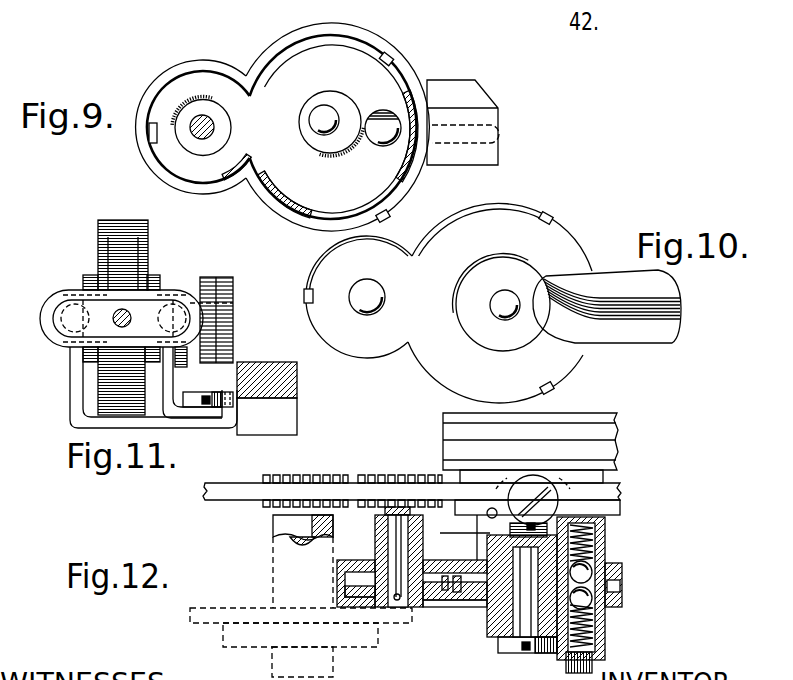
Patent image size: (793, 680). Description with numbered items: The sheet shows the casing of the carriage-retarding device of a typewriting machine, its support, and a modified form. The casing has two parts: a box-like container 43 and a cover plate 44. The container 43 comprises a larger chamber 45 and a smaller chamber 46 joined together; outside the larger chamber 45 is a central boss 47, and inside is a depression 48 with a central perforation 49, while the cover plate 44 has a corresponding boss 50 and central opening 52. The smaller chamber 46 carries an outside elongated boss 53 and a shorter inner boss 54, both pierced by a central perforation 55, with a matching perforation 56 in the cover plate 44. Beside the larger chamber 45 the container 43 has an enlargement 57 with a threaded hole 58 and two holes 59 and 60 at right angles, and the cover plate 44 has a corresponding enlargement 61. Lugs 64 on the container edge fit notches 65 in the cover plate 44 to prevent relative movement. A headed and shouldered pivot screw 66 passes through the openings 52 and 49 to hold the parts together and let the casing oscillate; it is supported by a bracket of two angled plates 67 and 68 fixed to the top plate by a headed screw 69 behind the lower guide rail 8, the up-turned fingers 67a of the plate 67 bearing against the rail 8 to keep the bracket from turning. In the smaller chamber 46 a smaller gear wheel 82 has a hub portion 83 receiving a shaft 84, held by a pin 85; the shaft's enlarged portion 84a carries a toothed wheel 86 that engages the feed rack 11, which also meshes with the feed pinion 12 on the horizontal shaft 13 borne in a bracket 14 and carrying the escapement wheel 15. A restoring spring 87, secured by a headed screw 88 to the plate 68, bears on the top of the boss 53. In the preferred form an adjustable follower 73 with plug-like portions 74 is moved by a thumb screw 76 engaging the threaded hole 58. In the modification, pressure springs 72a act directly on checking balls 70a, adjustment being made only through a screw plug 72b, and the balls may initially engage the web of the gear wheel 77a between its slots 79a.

In FIG. 11, the guide rail 8 is at (275, 396).
In FIG. 12, the guide rail 8 is at (617, 450).
In FIG. 12, the feed rack 11 is at (227, 488).
In FIG. 12, the feed pinion 12 is at (301, 478).
In FIG. 12, the horizontal shaft 13 is at (300, 546).
In FIG. 12, the bracket 14 is at (272, 525).
In FIG. 12, the escapement wheel 15 is at (296, 642).
In FIG. 9, the box-like container 43 is at (291, 127).
In FIG. 11, the box-like container 43 is at (149, 230).
In FIG. 10, the cover plate 44 is at (460, 303).
In FIG. 11, the cover plate 44 is at (104, 221).
In FIG. 9, the larger chamber 45 is at (308, 56).
In FIG. 9, the smaller chamber 46 is at (213, 83).
In FIG. 11, the central boss 47 is at (157, 280).
In FIG. 9, the depression 48 is at (341, 106).
In FIG. 9, the central perforation 49 is at (324, 112).
In FIG. 10, the boss 50 is at (505, 345).
In FIG. 11, the boss 50 is at (94, 282).
In FIG. 10, the central opening 52 is at (490, 315).
In FIG. 11, the outside elongated boss 53 is at (184, 297).
In FIG. 9, the inner boss 54 is at (192, 147).
In FIG. 12, the inner boss 54 is at (367, 573).
In FIG. 9, the central perforation 55 is at (214, 126).
In FIG. 10, the perforation 56 is at (367, 316).
In FIG. 9, the enlargement 57 is at (468, 91).
In FIG. 11, the enlargement 57 is at (170, 293).
In FIG. 9, the threaded hole 58 is at (498, 130).
In FIG. 9, the hole 59 is at (387, 126).
In FIG. 9, the hole 60 is at (378, 138).
In FIG. 10, the enlargement 61 is at (634, 342).
In FIG. 11, the enlargement 61 is at (70, 292).
In FIG. 9, the lugs 64 is at (392, 56).
In FIG. 11, the lugs 64 is at (99, 247).
In FIG. 10, the notches 65 is at (549, 220).
In FIG. 11, the pivot screw 66 is at (48, 333).
In FIG. 12, the pivot screw 66 is at (510, 653).
In FIG. 11, the angled plate 67 is at (73, 394).
In FIG. 12, the angled plate 67 is at (478, 557).
In FIG. 11, the up-turned fingers 67a is at (244, 364).
In FIG. 11, the angled plate 68 is at (203, 420).
In FIG. 12, the angled plate 68 is at (533, 480).
In FIG. 11, the headed screw 69 is at (193, 403).
In FIG. 12, the headed screw 69 is at (527, 483).
In FIG. 12, the checking balls 70a is at (592, 566).
In FIG. 12, the pressure springs 72a is at (598, 533).
In FIG. 12, the adjustable abutment or screw plug 72b is at (592, 660).
In FIG. 11, the adjustable slide or follower 73 is at (103, 322).
In FIG. 11, the plug-like portions 74 is at (127, 318).
In FIG. 11, the thumb screw 76 is at (123, 310).
In FIG. 12, the gear wheel 77a is at (456, 592).
In FIG. 12, the slots 79a is at (480, 627).
In FIG. 12, the smaller gear wheel 82 is at (434, 590).
In FIG. 12, the hub portion 83 is at (384, 603).
In FIG. 12, the shaft 84 is at (393, 528).
In FIG. 12, the enlarged portion 84a is at (398, 508).
In FIG. 12, the pin 85 is at (397, 601).
In FIG. 11, the toothed wheel 86 is at (226, 278).
In FIG. 12, the toothed wheel 86 is at (393, 476).
In FIG. 11, the restoring spring 87 is at (234, 306).
In FIG. 12, the restoring spring 87 is at (462, 534).
In FIG. 11, the headed screw 88 is at (186, 358).
In FIG. 12, the headed screw 88 is at (538, 521).